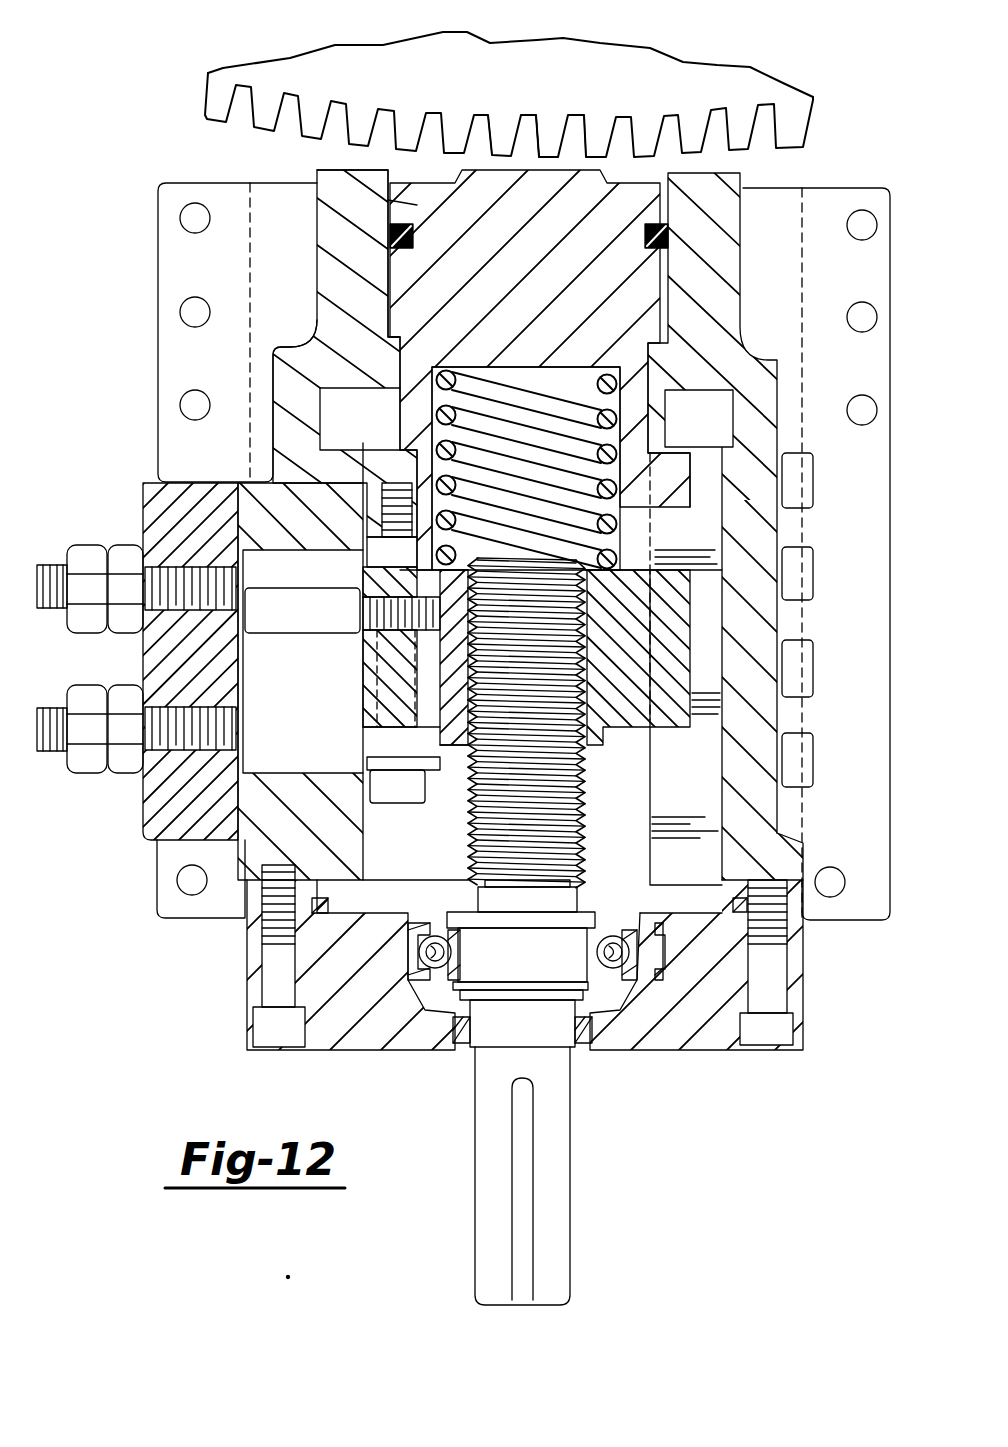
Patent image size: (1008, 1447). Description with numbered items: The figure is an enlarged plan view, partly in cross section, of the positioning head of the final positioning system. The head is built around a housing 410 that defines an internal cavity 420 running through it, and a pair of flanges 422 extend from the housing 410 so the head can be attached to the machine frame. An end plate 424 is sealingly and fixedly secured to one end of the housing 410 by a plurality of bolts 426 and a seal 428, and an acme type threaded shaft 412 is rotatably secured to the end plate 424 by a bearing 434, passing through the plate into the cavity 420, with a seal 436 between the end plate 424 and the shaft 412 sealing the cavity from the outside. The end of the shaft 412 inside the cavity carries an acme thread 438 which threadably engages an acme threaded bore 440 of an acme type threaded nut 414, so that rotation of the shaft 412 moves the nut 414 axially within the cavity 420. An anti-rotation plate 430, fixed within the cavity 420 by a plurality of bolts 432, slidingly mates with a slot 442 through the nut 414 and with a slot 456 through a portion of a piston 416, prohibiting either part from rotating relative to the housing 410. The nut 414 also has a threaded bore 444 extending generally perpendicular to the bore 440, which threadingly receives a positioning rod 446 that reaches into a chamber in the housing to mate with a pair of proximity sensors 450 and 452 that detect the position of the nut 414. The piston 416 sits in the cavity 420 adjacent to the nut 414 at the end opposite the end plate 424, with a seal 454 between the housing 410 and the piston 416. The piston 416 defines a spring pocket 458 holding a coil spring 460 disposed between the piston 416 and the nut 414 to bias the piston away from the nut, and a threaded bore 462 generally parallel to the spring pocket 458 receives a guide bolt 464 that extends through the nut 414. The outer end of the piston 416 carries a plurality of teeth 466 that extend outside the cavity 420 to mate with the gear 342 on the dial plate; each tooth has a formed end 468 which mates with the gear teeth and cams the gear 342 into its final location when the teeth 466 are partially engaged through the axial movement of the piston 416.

The gear 342 is at (490, 83).
The housing 410 is at (290, 357).
The acme type threaded shaft 412 is at (548, 1133).
The acme type threaded nut 414 is at (673, 603).
The piston 416 is at (417, 203).
The internal cavity 420 is at (440, 850).
The flanges 422 is at (175, 352).
The end plate 424 is at (372, 1030).
The bolts 426 is at (268, 1022).
The seal 428 is at (317, 898).
The anti-rotation plate 430 is at (707, 852).
The bolts 432 is at (805, 657).
The bearing 434 is at (630, 977).
The seal 436 is at (455, 1040).
The acme thread 438 is at (590, 783).
The acme threaded bore 440 is at (590, 590).
The slot 442 is at (673, 632).
The threaded bore 444 is at (378, 632).
The positioning rod 446 is at (325, 624).
The proximity sensor 450 is at (187, 567).
The proximity sensor 452 is at (210, 717).
The seal 454 is at (660, 190).
The slot 456 is at (640, 513).
The spring pocket 458 is at (440, 428).
The coil spring 460 is at (477, 367).
The threaded bore 462 is at (383, 505).
The guide bolt 464 is at (385, 783).
The teeth 466 is at (548, 150).
The formed end 468 is at (533, 150).